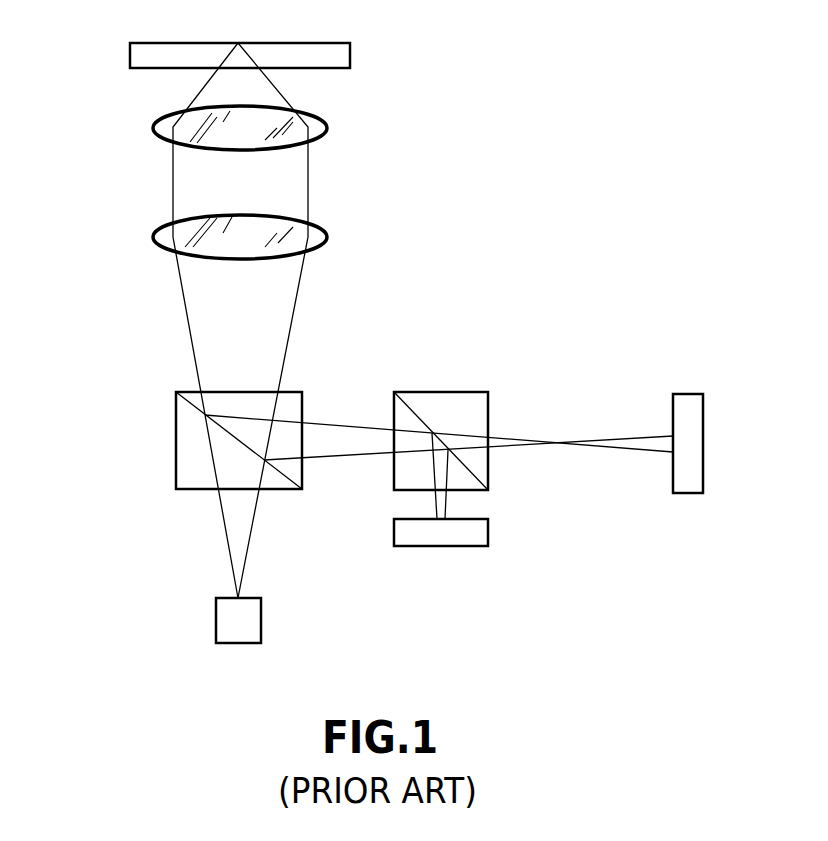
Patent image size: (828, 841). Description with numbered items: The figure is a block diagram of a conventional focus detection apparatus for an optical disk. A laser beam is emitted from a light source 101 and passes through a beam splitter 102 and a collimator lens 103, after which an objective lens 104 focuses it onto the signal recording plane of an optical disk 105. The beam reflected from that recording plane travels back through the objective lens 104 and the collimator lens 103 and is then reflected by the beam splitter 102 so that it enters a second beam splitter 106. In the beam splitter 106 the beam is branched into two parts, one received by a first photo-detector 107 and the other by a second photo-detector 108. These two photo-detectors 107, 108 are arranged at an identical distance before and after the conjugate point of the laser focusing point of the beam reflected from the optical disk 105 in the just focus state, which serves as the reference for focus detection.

The light source 101 is at (261, 617).
The beam splitter 102 is at (176, 421).
The collimator lens 103 is at (152, 236).
The objective lens 104 is at (152, 128).
The optical disk 105 is at (130, 52).
The beam splitter 106 is at (447, 392).
The first photo-detector 107 is at (686, 394).
The second photo-detector 108 is at (488, 532).